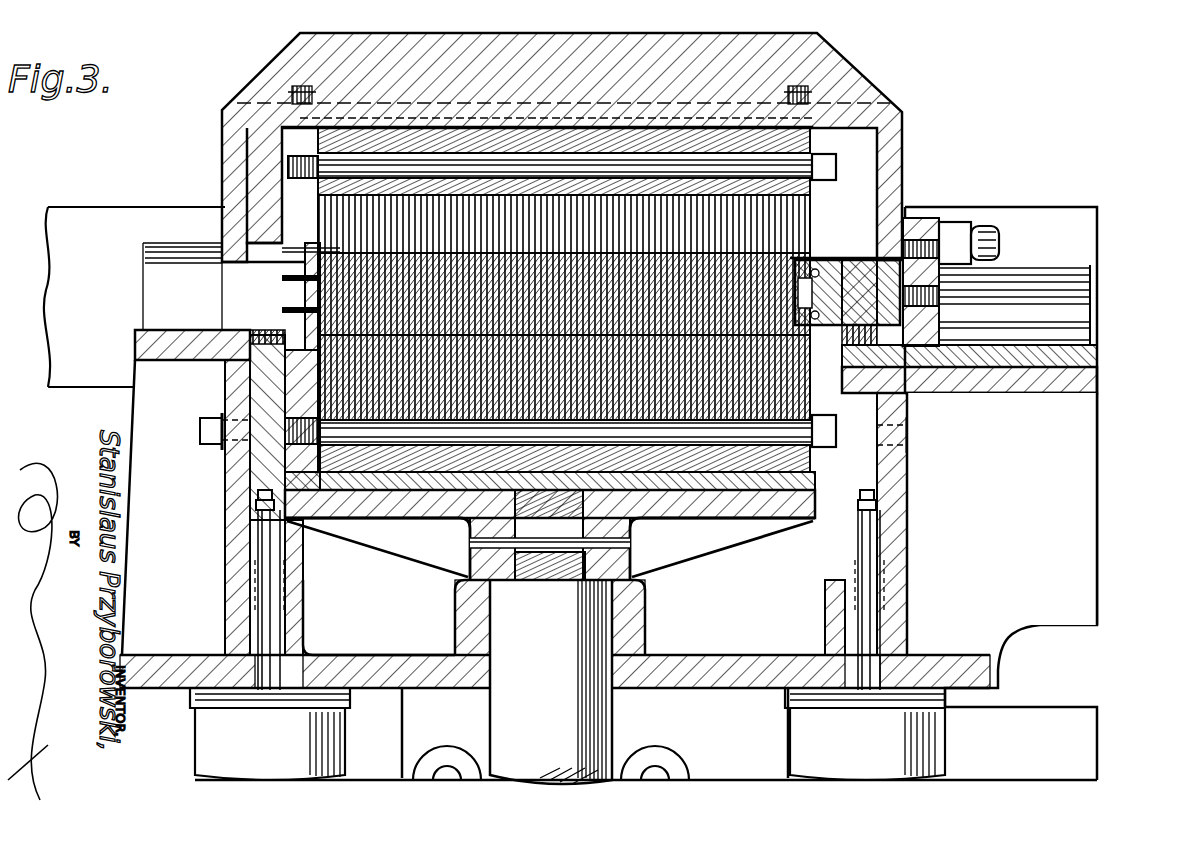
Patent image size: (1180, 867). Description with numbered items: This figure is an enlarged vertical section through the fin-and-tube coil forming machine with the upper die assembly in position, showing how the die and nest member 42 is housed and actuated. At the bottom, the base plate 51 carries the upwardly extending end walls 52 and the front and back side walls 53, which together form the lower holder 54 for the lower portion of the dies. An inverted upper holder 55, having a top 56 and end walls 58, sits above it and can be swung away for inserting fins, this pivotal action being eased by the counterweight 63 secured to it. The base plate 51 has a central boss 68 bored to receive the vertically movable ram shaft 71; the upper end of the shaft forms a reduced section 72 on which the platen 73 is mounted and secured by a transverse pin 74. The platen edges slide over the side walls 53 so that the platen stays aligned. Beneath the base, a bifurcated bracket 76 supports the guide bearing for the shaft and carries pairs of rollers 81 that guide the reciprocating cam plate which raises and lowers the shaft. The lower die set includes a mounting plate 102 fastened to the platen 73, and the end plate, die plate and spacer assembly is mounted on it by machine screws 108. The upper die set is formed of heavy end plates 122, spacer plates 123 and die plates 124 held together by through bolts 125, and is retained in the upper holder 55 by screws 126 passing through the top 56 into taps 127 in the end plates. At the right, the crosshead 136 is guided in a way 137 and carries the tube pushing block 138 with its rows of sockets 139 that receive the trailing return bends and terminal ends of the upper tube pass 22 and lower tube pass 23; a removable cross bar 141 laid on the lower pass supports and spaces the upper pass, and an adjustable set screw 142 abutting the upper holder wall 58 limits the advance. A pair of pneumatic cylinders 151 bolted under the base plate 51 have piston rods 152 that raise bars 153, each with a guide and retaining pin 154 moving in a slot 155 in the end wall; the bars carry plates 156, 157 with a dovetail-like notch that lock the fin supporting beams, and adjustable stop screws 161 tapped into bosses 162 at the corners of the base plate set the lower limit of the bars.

The upper tube pass 22 is at (282, 278).
The lower tube pass 23 is at (282, 310).
The die and nest member 42 is at (214, 173).
The base plate 51 is at (733, 660).
The end walls 52 is at (228, 548).
The side walls 53 is at (792, 582).
The lower holder 54 is at (784, 618).
The upper holder 55 is at (268, 63).
The top 56 is at (860, 60).
The end walls 58 is at (245, 140).
The counterweight 63 is at (105, 225).
The boss 68 is at (640, 618).
The ram shaft 71 is at (551, 682).
The reduced section 72 is at (528, 578).
The platen 73 is at (695, 548).
The transverse pin 74 is at (632, 543).
The bifurcated bracket 76 is at (646, 734).
The rollers 81 is at (630, 768).
The mounting plate 102 is at (448, 490).
The machine screws 108 is at (551, 549).
The end plates 122 is at (285, 187).
The spacer plates 123 is at (335, 228).
The die plates 124 is at (296, 249).
The through bolts 125 is at (830, 162).
The screws 126 is at (290, 95).
The taps 127 is at (300, 120).
The crosshead 136 is at (928, 232).
The way 137 is at (1080, 340).
The tube pushing block 138 is at (905, 210).
The sockets 139 is at (808, 268).
The cross bar 141 is at (830, 235).
The set screw 142 is at (985, 232).
The pneumatic cylinders 151 is at (222, 745).
The piston rods 152 is at (262, 580).
The bar 153 is at (256, 493).
The guide and retaining pin 154 is at (205, 420).
The slot 155 is at (230, 462).
The plate 156 is at (243, 333).
The plate 157 is at (250, 365).
The stop screws 161 is at (258, 508).
The bosses 162 is at (300, 625).